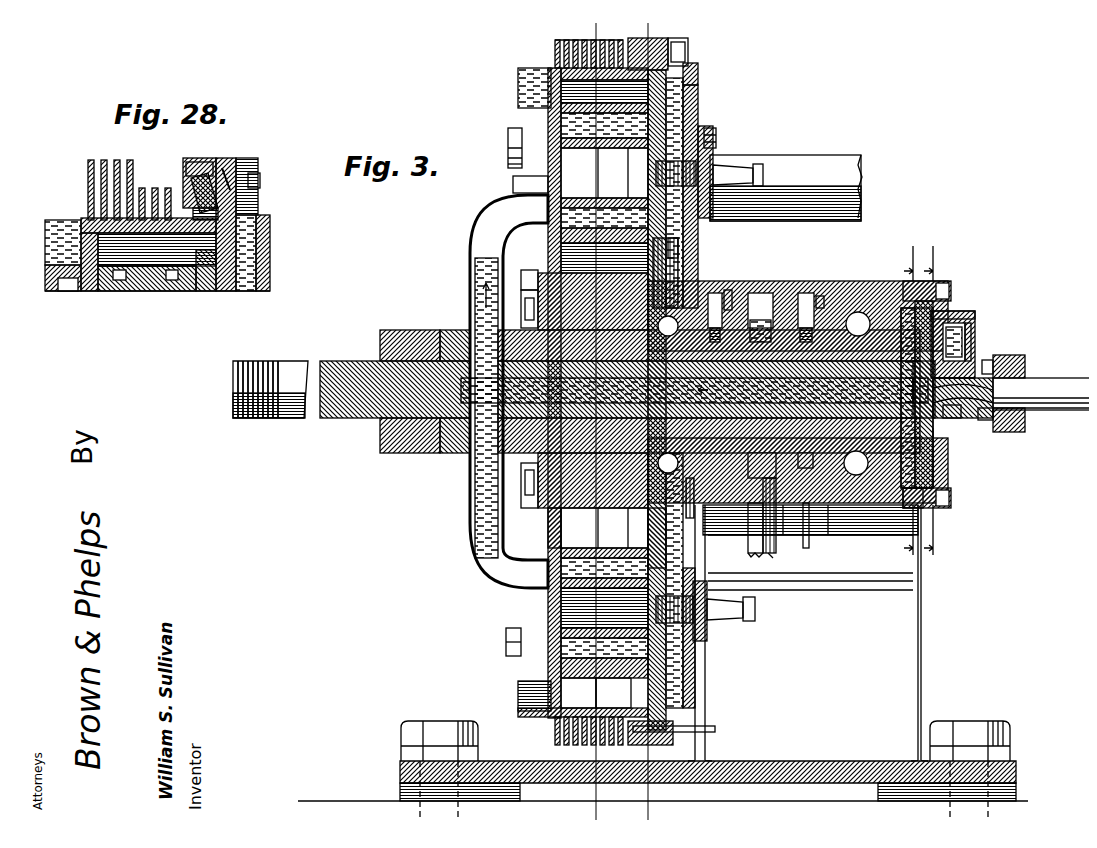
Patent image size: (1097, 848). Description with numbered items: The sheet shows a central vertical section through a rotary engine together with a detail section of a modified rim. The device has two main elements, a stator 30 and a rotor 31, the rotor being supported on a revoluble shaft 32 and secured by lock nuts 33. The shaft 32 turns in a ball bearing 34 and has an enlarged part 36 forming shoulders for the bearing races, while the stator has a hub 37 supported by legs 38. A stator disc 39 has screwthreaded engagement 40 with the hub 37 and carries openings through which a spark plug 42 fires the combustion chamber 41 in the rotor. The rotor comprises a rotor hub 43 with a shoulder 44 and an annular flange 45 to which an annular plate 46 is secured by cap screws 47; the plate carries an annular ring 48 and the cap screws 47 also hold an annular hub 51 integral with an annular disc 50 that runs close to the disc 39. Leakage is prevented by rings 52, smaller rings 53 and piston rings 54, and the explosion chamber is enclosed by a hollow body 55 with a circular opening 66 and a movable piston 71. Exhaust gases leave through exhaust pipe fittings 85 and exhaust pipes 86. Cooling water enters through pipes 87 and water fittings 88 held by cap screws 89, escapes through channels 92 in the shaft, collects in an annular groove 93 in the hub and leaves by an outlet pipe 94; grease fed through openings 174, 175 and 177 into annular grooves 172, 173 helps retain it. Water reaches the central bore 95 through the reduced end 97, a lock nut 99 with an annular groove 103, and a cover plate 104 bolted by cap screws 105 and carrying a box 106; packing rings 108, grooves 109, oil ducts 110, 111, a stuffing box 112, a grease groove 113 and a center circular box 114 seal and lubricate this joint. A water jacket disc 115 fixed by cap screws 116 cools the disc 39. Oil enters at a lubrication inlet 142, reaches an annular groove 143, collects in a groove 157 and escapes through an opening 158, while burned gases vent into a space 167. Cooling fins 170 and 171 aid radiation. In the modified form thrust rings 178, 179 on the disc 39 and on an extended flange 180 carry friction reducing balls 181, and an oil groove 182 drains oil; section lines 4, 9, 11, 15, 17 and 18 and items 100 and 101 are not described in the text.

In FIG. 3, the section line 4 is at (588, 18).
In FIG. 3, the section line 9 is at (640, 18).
In FIG. 3, the bolt 11 is at (745, 563).
In FIG. 3, the bolt 15 is at (797, 270).
In FIG. 3, the dimension line 17 is at (899, 401).
In FIG. 3, the dimension line 18 is at (940, 400).
In FIG. 3, the stator 30 is at (698, 82).
In FIG. 3, the rotor 31 is at (504, 633).
In FIG. 3, the revoluble shaft 32 is at (365, 400).
In FIG. 3, the lock nuts 33 is at (425, 445).
In FIG. 3, the ball bearing 34 is at (700, 264).
In FIG. 3, the enlarged part 36 is at (852, 303).
In FIG. 3, the hub 37 is at (846, 500).
In FIG. 3, the legs 38 is at (913, 645).
In FIG. 28, the disc 39 is at (262, 233).
In FIG. 3, the disc 39 is at (690, 112).
In FIG. 3, the screwthreaded engagement 40 is at (753, 266).
In FIG. 3, the combustion chamber 41 is at (560, 165).
In FIG. 3, the spark plug 42 is at (722, 160).
In FIG. 3, the rotor hub 43 is at (466, 440).
In FIG. 3, the shoulder 44 is at (467, 482).
In FIG. 3, the annular flange 45 is at (515, 262).
In FIG. 3, the annular plate 46 is at (515, 180).
In FIG. 3, the cap screws 47 is at (513, 295).
In FIG. 28, the annular ring 48 is at (80, 212).
In FIG. 3, the annular ring 48 is at (548, 58).
In FIG. 28, the annular disc 50 is at (197, 283).
In FIG. 3, the annular disc 50 is at (606, 672).
In FIG. 3, the annular hub 51 is at (626, 157).
In FIG. 3, the rings 52 is at (676, 98).
In FIG. 3, the rings 53 is at (672, 262).
In FIG. 3, the piston rings 54 is at (680, 52).
In FIG. 28, the hollow body 55 is at (113, 283).
In FIG. 3, the hollow body 55 is at (576, 672).
In FIG. 3, the circular opening 66 is at (626, 178).
In FIG. 28, the movable piston 71 is at (143, 283).
In FIG. 3, the movable piston 71 is at (500, 133).
In FIG. 3, the exhaust pipe fittings 85 is at (708, 130).
In FIG. 3, the exhaust pipes 86 is at (804, 160).
In FIG. 3, the pipes 87 is at (462, 562).
In FIG. 3, the water fittings 88 is at (500, 156).
In FIG. 3, the cap screws 89 is at (500, 150).
In FIG. 3, the channels 92 is at (515, 496).
In FIG. 3, the annular groove 93 is at (740, 535).
In FIG. 3, the outlet pipe 94 is at (768, 545).
In FIG. 3, the central bore 95 is at (948, 450).
In FIG. 3, the reduced end 97 is at (942, 284).
In FIG. 3, the lock nut 99 is at (944, 490).
In FIG. 3, the housing 100 is at (870, 497).
In FIG. 3, the shaft end 101 is at (904, 380).
In FIG. 3, the annular groove 103 is at (964, 326).
In FIG. 3, the cover plate 104 is at (926, 470).
In FIG. 3, the cap screws 105 is at (942, 270).
In FIG. 3, the box 106 is at (968, 305).
In FIG. 3, the packing rings 108 is at (950, 305).
In FIG. 3, the second pair of grooves 109 is at (962, 360).
In FIG. 3, the oil duct 110 is at (944, 412).
In FIG. 3, the oil duct 111 is at (958, 318).
In FIG. 3, the stuffing box 112 is at (1017, 360).
In FIG. 3, the grease groove 113 is at (982, 353).
In FIG. 3, the center circular box 114 is at (975, 412).
In FIG. 28, the disc 115 is at (262, 262).
In FIG. 3, the disc 115 is at (690, 68).
In FIG. 3, the cap screws 116 is at (680, 40).
In FIG. 3, the lubrication inlet 142 is at (690, 262).
In FIG. 3, the annular groove 143 is at (648, 508).
In FIG. 3, the groove 157 is at (615, 736).
In FIG. 3, the opening 158 is at (680, 713).
In FIG. 3, the space 167 is at (556, 524).
In FIG. 3, the cooling fins 170 is at (512, 92).
In FIG. 3, the cooling fins 171 is at (562, 30).
In FIG. 3, the annular groove 172 is at (687, 510).
In FIG. 3, the annular groove 173 is at (822, 497).
In FIG. 3, the opening 174 is at (722, 282).
In FIG. 3, the opening 175 is at (810, 290).
In FIG. 3, the opening 177 is at (772, 497).
In FIG. 28, the thrust ring 178 is at (252, 174).
In FIG. 28, the thrust ring 179 is at (190, 151).
In FIG. 28, the extended flange 180 is at (180, 184).
In FIG. 28, the friction reducing balls 181 is at (248, 158).
In FIG. 28, the oil groove 182 is at (216, 162).